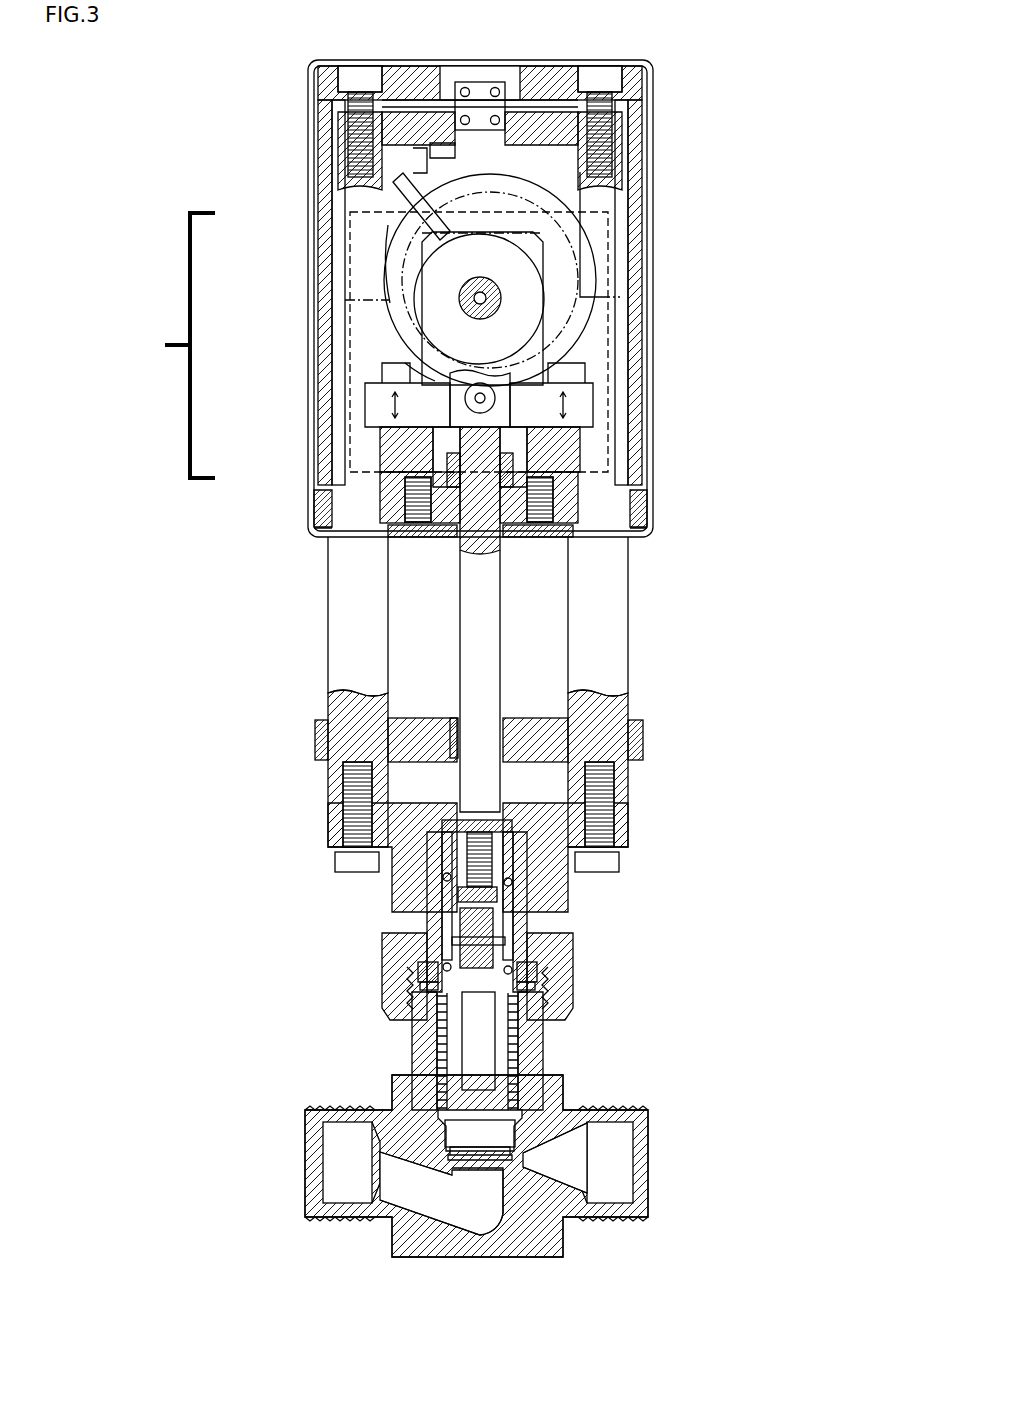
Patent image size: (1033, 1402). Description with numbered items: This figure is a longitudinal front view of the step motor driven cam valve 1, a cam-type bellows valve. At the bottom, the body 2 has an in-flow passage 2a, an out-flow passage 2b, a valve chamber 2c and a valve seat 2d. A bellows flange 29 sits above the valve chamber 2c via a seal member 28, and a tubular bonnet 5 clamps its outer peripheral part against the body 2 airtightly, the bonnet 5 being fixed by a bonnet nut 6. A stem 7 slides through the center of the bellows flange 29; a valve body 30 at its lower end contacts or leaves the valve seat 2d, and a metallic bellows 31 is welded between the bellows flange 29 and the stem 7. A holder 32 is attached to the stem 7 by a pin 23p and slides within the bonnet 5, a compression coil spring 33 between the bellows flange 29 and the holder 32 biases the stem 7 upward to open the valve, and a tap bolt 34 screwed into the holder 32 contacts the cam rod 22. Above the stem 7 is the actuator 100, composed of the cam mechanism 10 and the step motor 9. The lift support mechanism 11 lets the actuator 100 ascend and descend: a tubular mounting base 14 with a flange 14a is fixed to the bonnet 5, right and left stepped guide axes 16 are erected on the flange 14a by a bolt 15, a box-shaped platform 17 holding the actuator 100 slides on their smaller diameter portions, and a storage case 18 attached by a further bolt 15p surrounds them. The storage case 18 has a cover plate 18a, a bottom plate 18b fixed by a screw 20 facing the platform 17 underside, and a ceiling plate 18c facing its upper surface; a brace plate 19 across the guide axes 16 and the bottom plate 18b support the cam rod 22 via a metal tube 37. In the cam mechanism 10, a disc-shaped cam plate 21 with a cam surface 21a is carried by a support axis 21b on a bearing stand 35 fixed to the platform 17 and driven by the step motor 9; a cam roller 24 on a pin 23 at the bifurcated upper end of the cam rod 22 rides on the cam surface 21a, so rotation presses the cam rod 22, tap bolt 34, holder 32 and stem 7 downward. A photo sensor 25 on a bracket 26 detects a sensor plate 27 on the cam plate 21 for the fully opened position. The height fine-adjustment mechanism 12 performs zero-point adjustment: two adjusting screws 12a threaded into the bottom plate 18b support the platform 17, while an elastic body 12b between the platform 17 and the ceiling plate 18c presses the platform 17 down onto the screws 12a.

The cam valve 1 is at (730, 304).
The body 2 is at (390, 1242).
The in-flow passage 2a is at (395, 1175).
The out-flow passage 2b is at (584, 1145).
The valve chamber 2c is at (515, 1150).
The valve seat 2d is at (458, 1222).
The bonnet 5 is at (524, 920).
The bonnet nut 6 is at (392, 967).
The stem 7 is at (480, 1037).
The step motor 9 is at (383, 297).
The cam mechanism 10 is at (434, 383).
The lift support mechanism 11 is at (328, 662).
The height fine-adjustment mechanism 12 is at (540, 530).
The adjusting screw 12a is at (418, 530).
The elastic body 12b is at (488, 79).
The mounting base 14 is at (400, 877).
The flange 14a is at (604, 832).
The bolt 15 is at (345, 827).
The bolt 15p is at (362, 72).
The guide axis 16 is at (620, 347).
The platform 17 is at (552, 107).
The storage case 18 is at (311, 167).
The cover plate 18a is at (647, 207).
The bottom plate 18b is at (400, 512).
The ceiling plate 18c is at (428, 77).
The brace plate 19 is at (532, 732).
The screw 20 is at (638, 516).
The cam plate 21 is at (413, 282).
The cam surface 21a is at (493, 394).
The support axis 21b is at (476, 279).
The cam rod 22 is at (478, 626).
The pin 23 is at (524, 427).
The pin 23p is at (452, 937).
The cam roller 24 is at (457, 400).
The photo sensor 25 is at (388, 225).
The bracket 26 is at (425, 152).
The sensor plate 27 is at (530, 195).
The seal member 28 is at (535, 983).
The bellows flange 29 is at (521, 977).
The valve body 30 is at (453, 1129).
The metallic bellows 31 is at (445, 1047).
The holder 32 is at (442, 829).
The compression coil spring 33 is at (511, 882).
The tap bolt 34 is at (487, 797).
The bearing stand 35 is at (418, 342).
The metal tube 37 is at (524, 457).
The actuator 100 is at (167, 345).